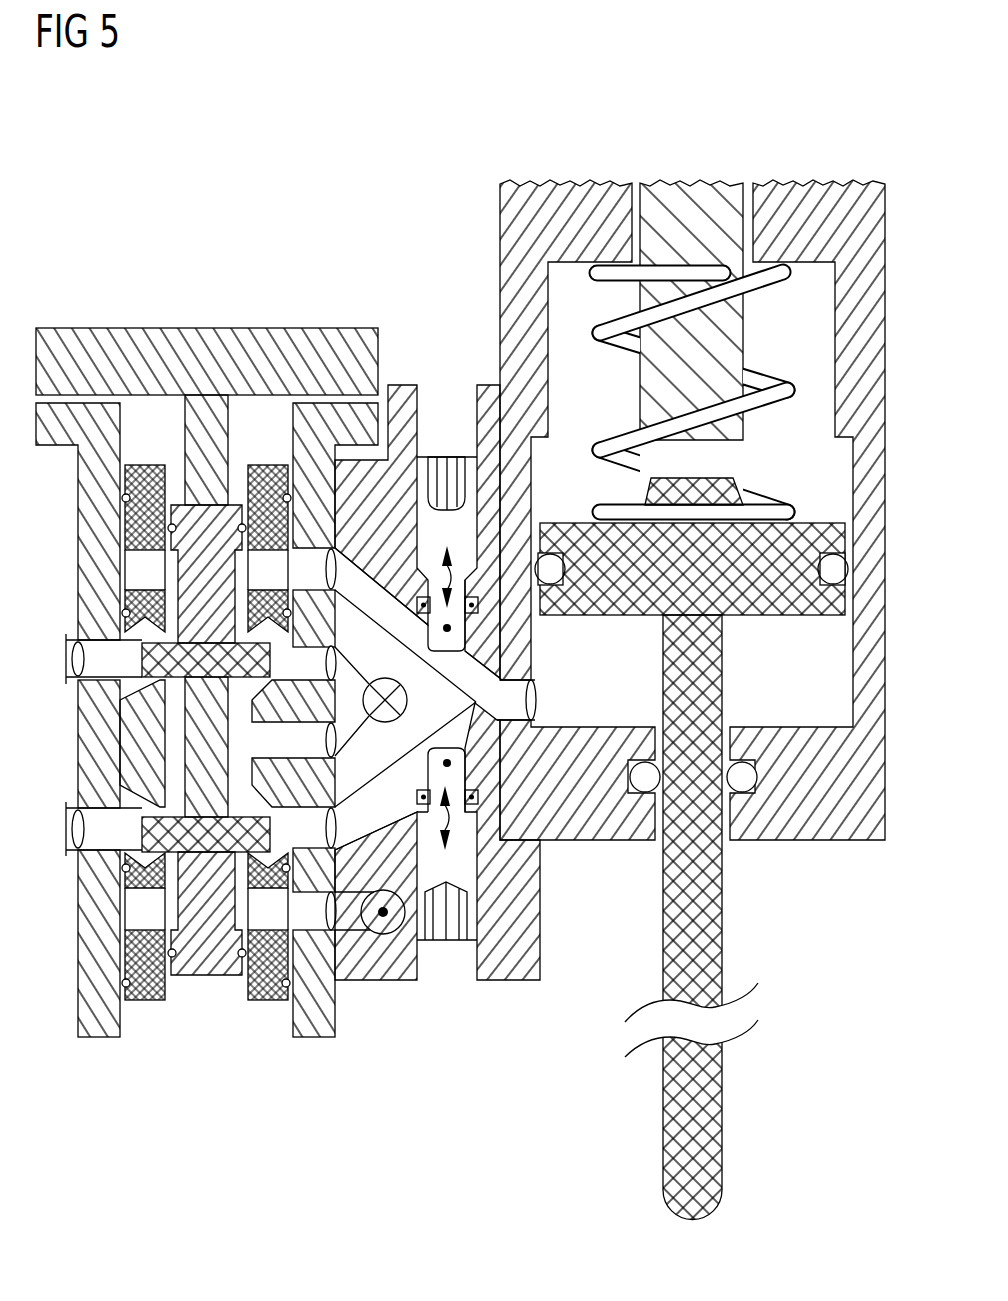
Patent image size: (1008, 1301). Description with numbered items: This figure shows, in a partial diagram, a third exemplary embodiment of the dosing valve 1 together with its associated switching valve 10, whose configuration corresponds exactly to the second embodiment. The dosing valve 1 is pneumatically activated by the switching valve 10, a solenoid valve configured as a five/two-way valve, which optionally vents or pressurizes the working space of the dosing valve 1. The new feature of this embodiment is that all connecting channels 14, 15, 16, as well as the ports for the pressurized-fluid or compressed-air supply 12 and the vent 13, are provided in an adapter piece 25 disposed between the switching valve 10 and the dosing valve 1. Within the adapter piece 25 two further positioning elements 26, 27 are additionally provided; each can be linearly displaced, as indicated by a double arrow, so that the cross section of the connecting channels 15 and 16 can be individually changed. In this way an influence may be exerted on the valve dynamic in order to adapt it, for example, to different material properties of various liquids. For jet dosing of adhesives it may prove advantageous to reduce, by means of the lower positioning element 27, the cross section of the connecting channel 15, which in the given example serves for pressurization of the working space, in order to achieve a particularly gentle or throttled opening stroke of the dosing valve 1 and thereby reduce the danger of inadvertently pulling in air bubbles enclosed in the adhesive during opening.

The dosing valve 1 is at (760, 142).
The switching valve 10 is at (115, 205).
The pressurized-fluid or compressed-air supply 12 is at (383, 934).
The vent 13 is at (383, 677).
The connecting channel 14 is at (327, 662).
The connecting channel 15 is at (327, 835).
The connecting channel 16 is at (327, 578).
The adapter piece 25 is at (475, 992).
The positioning element 26 is at (448, 632).
The positioning element 27 is at (443, 760).